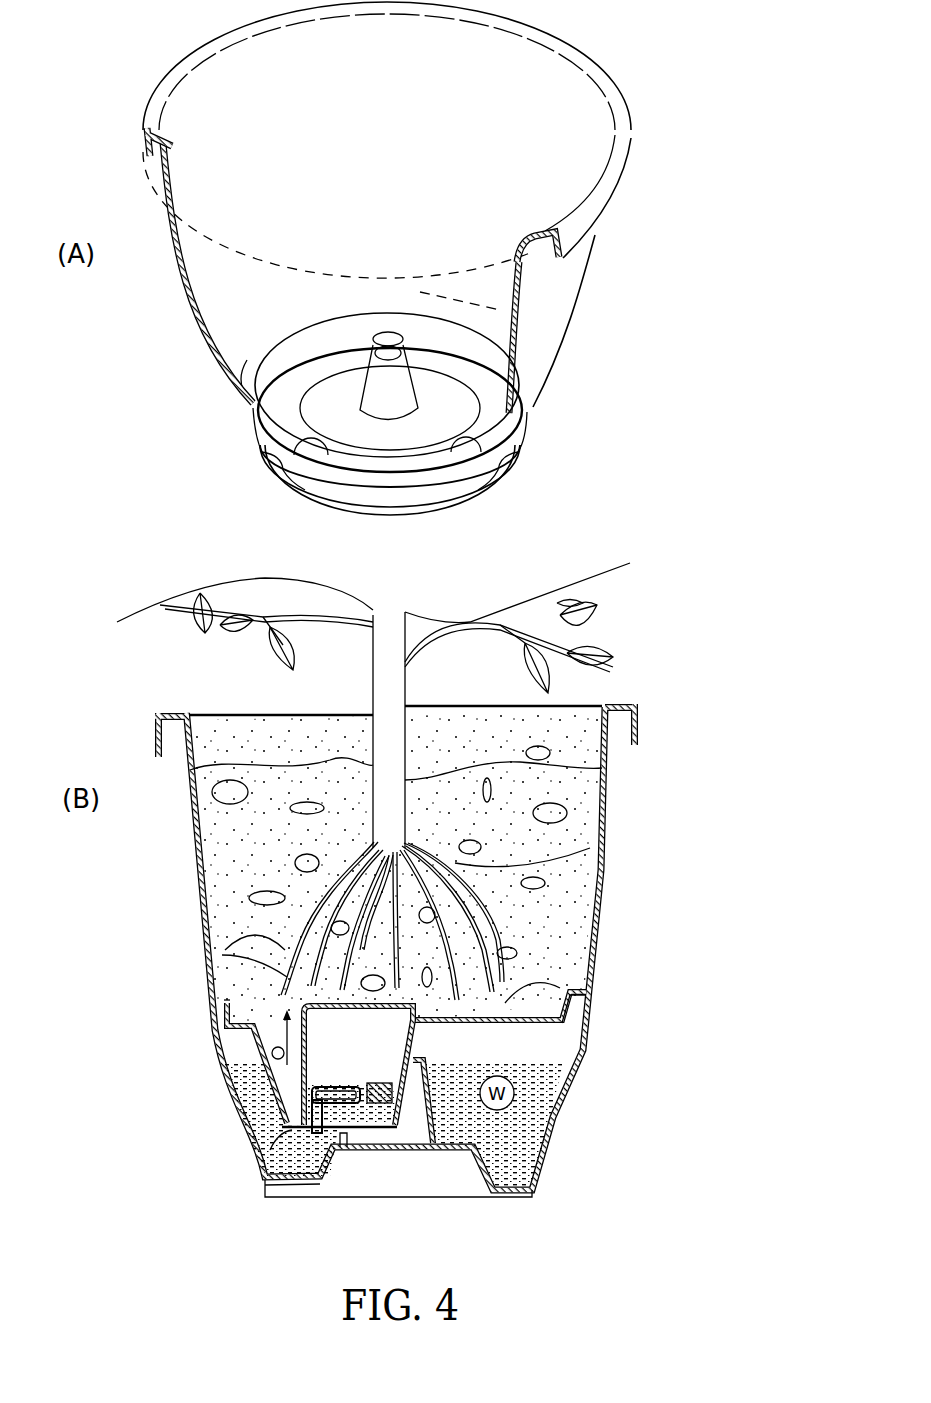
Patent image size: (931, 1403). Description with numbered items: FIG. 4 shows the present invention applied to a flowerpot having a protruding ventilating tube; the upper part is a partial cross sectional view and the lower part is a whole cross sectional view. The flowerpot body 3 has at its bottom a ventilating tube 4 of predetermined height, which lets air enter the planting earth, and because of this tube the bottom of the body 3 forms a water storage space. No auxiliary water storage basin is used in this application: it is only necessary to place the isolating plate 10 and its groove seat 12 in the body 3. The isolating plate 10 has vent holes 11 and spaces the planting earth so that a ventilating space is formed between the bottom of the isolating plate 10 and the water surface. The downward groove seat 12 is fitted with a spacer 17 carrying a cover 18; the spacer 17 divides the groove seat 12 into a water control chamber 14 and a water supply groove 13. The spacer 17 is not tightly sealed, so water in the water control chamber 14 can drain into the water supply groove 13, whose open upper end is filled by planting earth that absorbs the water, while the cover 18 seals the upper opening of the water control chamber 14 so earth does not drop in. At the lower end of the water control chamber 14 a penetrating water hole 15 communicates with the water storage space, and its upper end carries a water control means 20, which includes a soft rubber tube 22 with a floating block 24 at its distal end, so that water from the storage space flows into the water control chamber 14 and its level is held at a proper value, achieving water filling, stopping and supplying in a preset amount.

The flowerpot body 3 is at (557, 332).
The ventilating tube 4 is at (403, 385).
The isolating plate 10 is at (583, 995).
The vent holes 11 is at (520, 1012).
The groove seat 12 is at (292, 1063).
The water supply groove 13 is at (292, 1075).
The water control chamber 14 is at (292, 1077).
The water hole 15 is at (265, 1194).
The spacer 17 is at (292, 1032).
The cover 18 is at (287, 1002).
The water control means 20 is at (345, 1080).
The soft rubber tube 22 is at (363, 1106).
The floating block 24 is at (385, 1106).